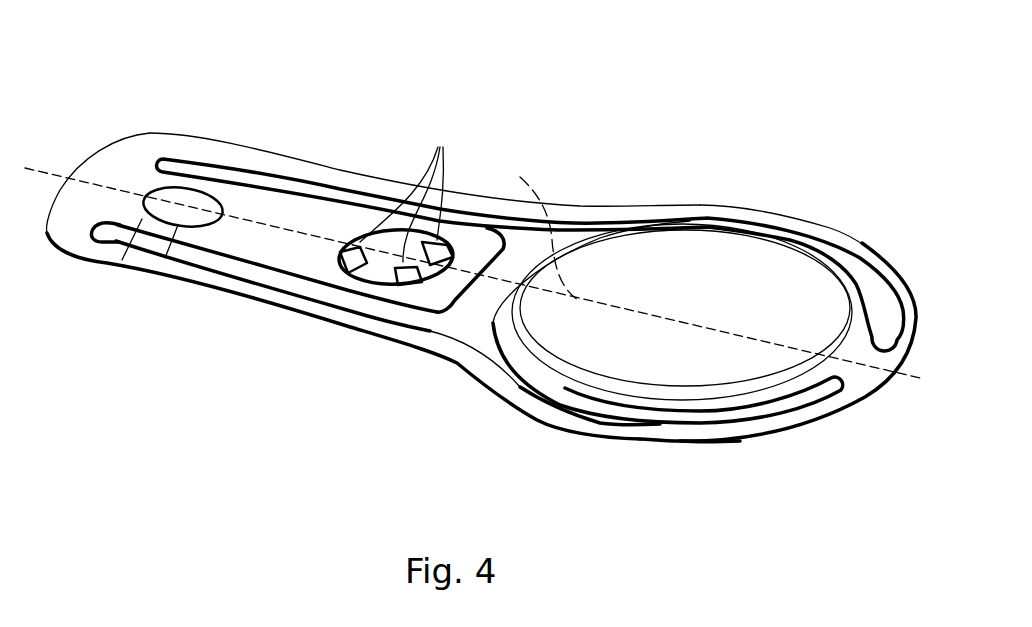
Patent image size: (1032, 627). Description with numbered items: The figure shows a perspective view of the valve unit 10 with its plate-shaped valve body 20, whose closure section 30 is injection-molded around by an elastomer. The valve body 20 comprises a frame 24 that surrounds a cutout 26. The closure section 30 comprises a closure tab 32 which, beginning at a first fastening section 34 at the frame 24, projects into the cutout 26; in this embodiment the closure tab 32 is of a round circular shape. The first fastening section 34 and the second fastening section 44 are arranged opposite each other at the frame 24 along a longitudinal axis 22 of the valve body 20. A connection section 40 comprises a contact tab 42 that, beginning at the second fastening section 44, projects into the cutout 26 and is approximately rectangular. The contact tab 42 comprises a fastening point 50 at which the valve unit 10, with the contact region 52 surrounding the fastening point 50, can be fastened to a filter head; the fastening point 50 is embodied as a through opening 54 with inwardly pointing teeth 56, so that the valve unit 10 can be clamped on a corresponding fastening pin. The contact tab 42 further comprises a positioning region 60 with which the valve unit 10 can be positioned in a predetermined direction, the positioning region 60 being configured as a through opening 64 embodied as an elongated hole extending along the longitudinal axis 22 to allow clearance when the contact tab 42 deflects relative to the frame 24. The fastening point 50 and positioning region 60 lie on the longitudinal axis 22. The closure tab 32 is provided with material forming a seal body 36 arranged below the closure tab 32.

The valve unit 10 is at (606, 150).
The valve body 20 is at (297, 164).
The longitudinal axis 22 is at (539, 221).
The frame 24 is at (727, 207).
The cutout 26 is at (490, 328).
The closure section 30 is at (735, 308).
The closure tab 32 is at (520, 380).
The first fastening section 34 is at (866, 374).
The seal body 36 is at (685, 446).
The connection section 40 is at (324, 227).
The contact tab 42 is at (240, 263).
The second fastening section 44 is at (124, 172).
The fastening point 50 is at (362, 282).
The contact region 52 is at (323, 260).
The through opening 54 is at (396, 263).
The teeth 56 is at (408, 175).
The positioning region 60 is at (124, 245).
The through opening 64 is at (166, 256).